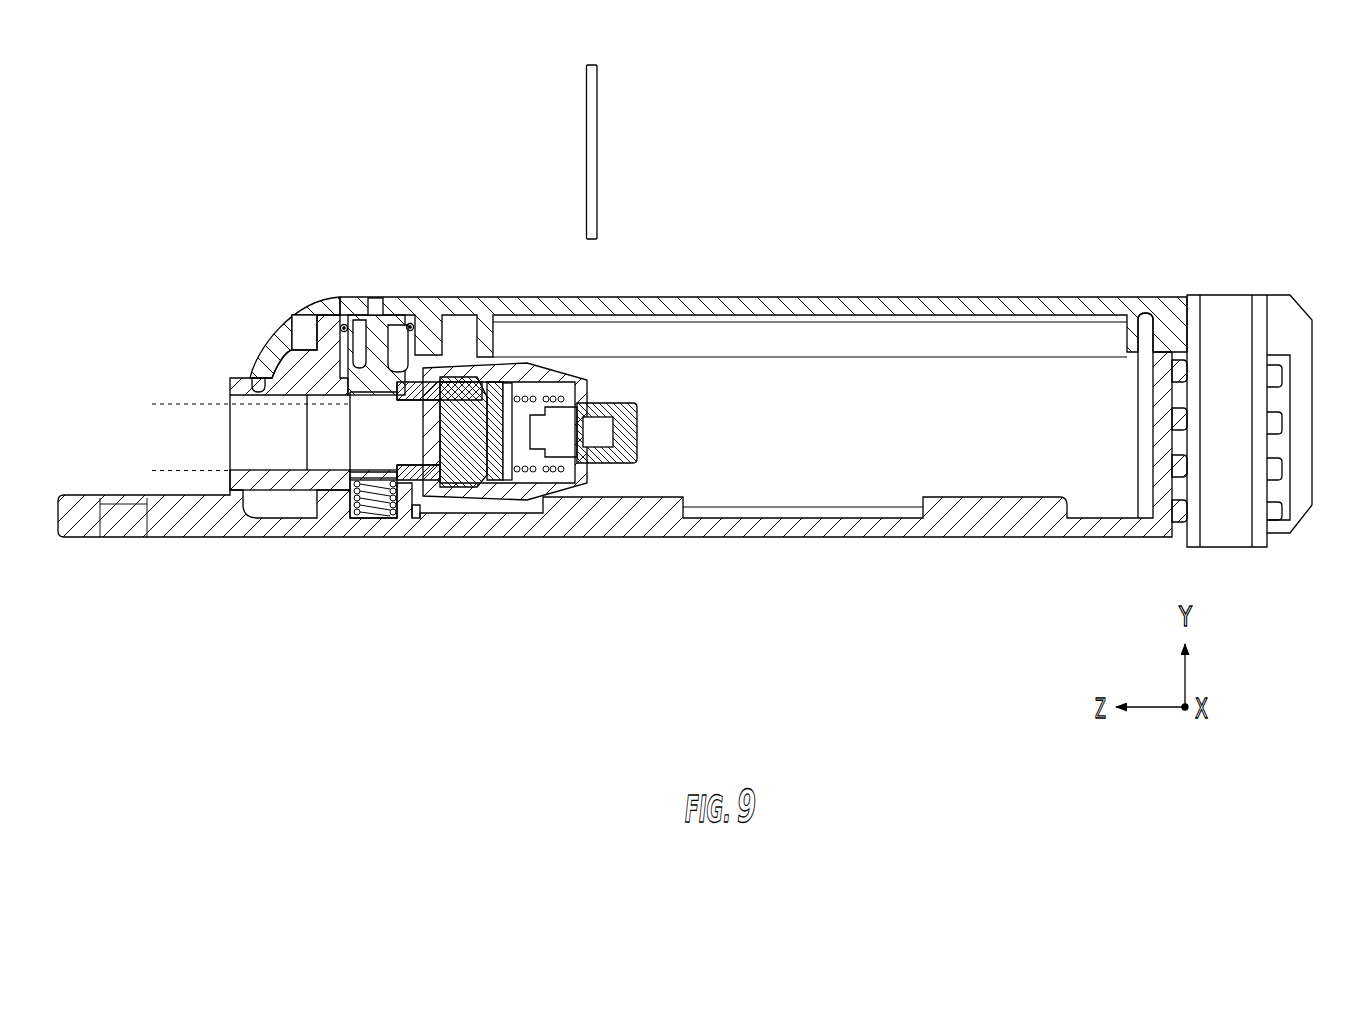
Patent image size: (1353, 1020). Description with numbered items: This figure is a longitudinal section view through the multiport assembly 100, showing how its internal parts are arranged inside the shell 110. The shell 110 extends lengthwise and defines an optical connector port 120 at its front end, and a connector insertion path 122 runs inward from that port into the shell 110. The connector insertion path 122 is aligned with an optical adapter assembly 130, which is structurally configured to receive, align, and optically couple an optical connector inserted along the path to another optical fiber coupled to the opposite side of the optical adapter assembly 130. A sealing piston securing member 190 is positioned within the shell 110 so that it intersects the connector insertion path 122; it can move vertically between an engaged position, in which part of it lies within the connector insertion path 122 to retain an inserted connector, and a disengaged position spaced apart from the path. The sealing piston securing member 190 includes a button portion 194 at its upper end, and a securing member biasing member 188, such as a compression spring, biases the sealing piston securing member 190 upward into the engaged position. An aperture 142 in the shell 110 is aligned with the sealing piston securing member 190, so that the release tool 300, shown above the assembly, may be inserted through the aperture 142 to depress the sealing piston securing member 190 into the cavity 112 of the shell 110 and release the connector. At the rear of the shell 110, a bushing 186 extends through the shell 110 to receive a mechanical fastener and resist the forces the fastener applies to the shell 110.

The multiport assembly 100 is at (978, 221).
The shell 110 is at (801, 284).
The cavity 112 is at (995, 446).
The optical connector port 120 is at (205, 411).
The connector insertion path 122 is at (155, 466).
The optical adapter assembly 130 is at (651, 409).
The aperture 142 is at (376, 298).
The bushing 186 is at (1251, 291).
The securing member biasing member 188 is at (375, 508).
The sealing piston securing member 190 is at (413, 318).
The button portion 194 is at (343, 299).
The release tool 300 is at (614, 149).